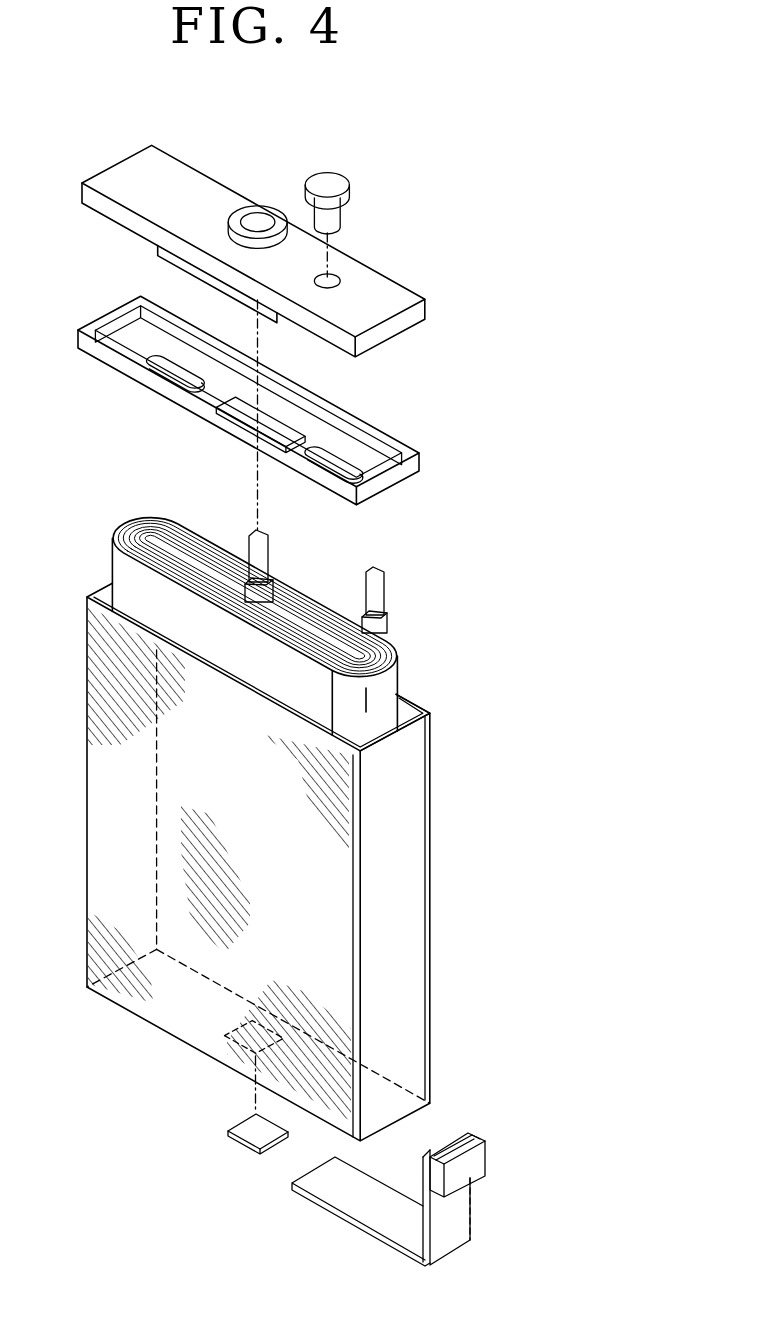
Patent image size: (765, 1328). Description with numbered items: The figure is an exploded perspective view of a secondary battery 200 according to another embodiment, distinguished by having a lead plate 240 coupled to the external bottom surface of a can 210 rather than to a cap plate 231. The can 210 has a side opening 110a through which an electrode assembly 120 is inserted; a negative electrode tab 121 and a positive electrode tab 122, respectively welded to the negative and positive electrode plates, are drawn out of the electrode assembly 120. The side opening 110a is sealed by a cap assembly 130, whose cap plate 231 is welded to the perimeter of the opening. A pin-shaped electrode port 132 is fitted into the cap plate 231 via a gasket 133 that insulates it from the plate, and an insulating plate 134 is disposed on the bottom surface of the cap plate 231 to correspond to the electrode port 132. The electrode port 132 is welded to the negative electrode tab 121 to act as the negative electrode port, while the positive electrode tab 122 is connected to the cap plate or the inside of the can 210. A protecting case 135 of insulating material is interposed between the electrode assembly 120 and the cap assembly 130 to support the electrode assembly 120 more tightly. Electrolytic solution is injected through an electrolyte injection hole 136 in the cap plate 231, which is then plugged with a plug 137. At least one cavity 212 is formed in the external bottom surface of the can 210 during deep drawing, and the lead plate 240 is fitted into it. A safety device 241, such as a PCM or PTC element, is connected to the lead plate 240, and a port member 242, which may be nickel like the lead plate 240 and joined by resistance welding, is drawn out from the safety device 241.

The secondary battery 200 is at (522, 321).
The can 210 is at (416, 875).
The side opening 110a is at (426, 706).
The cavity 212 is at (246, 1040).
The electrode assembly 120 is at (424, 655).
The negative electrode tab 121 is at (268, 551).
The positive electrode tab 122 is at (384, 582).
The cap assembly 130 is at (403, 268).
The cap plate 231 is at (390, 323).
The electrode port 132 is at (251, 224).
The gasket 133 is at (274, 216).
The insulating plate 134 is at (157, 255).
The protecting case 135 is at (120, 367).
The electrolyte injection hole 136 is at (334, 278).
The plug 137 is at (333, 178).
The lead plate 240 is at (243, 1140).
The safety device 241 is at (478, 1162).
The port member 242 is at (462, 1208).